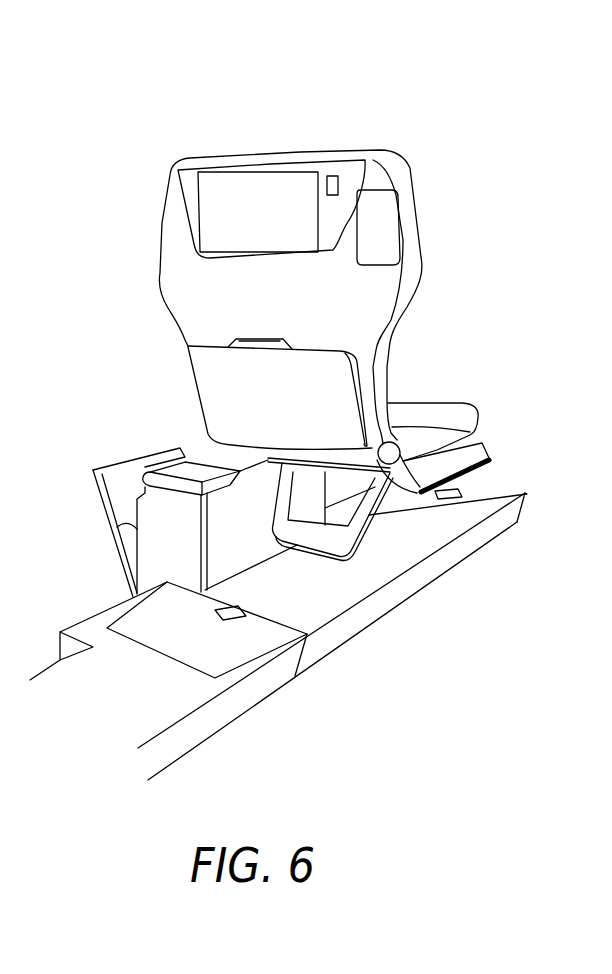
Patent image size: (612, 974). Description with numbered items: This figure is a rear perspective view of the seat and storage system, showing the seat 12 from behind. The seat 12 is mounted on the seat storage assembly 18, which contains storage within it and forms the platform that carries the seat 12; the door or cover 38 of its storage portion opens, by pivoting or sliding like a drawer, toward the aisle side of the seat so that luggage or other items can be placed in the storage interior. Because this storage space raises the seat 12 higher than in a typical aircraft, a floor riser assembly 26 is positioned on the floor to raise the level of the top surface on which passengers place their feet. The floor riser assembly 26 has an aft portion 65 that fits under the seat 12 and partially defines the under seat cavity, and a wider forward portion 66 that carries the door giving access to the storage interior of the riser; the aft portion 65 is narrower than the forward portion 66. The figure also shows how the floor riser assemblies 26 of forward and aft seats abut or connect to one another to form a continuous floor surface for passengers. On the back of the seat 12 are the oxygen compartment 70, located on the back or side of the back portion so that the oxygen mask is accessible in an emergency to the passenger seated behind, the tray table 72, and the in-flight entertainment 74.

The seat 12 is at (212, 133).
The seat storage assembly 18 is at (150, 545).
The floor riser assembly 26 is at (432, 540).
The door or cover 38 is at (115, 478).
The aft portion 65 is at (330, 612).
The forward portion 66 is at (260, 662).
The oxygen compartment 70 is at (383, 222).
The tray table 72 is at (203, 366).
The in-flight entertainment 74 is at (213, 208).